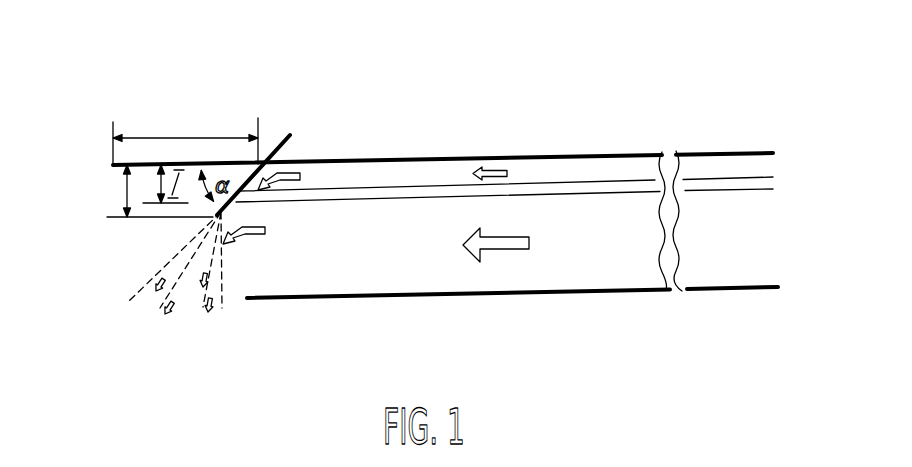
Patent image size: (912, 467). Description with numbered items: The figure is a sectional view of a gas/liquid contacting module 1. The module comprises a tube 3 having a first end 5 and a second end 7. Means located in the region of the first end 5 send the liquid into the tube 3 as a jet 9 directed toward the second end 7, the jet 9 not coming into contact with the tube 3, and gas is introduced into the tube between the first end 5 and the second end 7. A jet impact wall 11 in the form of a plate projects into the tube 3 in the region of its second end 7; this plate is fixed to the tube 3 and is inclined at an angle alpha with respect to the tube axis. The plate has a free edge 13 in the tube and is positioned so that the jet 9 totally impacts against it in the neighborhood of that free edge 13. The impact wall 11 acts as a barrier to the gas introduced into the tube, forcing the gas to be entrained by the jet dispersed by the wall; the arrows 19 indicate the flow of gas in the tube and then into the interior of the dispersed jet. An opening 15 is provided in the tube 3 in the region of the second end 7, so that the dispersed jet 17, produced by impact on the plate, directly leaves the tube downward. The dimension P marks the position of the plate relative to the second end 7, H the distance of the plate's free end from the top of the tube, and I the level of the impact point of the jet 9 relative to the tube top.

The module 1 is at (134, 91).
The tube 3 is at (587, 295).
The first end 5 is at (765, 150).
The second end 7 is at (108, 164).
The jet 9 is at (608, 185).
The jet impact wall 11 is at (290, 133).
The free edge 13 is at (233, 208).
The opening 15 is at (236, 301).
The dispersed jet 17 is at (128, 296).
The arrows 19 is at (508, 250).